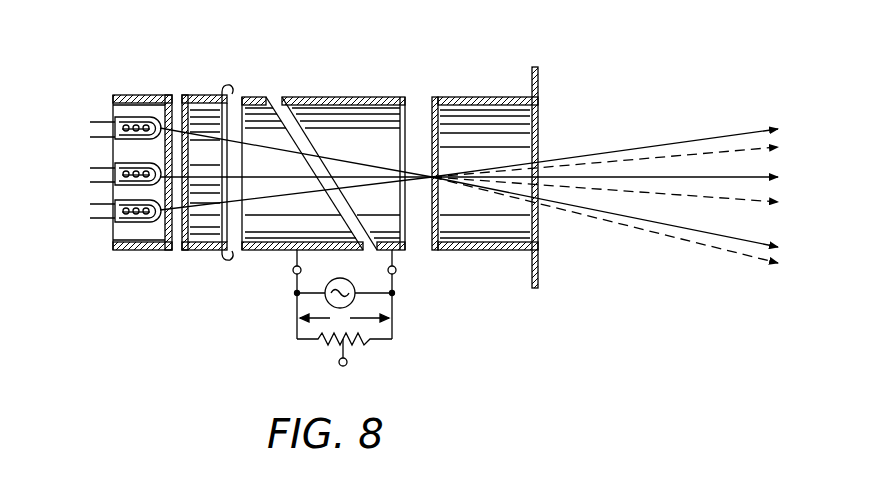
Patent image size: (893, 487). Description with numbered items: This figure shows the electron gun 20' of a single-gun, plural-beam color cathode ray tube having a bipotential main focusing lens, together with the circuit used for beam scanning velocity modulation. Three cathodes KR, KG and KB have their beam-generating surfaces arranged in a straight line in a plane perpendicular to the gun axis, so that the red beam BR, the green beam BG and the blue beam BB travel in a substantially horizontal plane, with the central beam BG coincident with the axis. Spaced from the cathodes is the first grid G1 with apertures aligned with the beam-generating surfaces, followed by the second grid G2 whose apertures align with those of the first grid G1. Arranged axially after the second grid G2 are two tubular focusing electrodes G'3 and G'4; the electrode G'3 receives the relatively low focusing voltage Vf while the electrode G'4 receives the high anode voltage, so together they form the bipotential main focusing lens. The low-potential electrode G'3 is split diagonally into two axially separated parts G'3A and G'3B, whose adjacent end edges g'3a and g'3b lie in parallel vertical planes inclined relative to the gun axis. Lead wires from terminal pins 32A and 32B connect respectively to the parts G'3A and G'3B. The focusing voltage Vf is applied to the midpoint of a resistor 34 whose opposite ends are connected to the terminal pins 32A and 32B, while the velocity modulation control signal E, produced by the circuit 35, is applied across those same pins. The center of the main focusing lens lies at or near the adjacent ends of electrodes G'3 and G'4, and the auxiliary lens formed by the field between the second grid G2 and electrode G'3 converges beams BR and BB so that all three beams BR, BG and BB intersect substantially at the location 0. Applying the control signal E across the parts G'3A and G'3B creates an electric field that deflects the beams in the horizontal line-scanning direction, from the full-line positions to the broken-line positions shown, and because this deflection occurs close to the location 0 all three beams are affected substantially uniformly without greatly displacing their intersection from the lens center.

The first grid G1 is at (142, 93).
The second grid G2 is at (202, 93).
The focusing lens electrode G'3 is at (319, 130).
The electrode part G'3A is at (298, 152).
The electrode part G'3B is at (343, 155).
The focusing electrode G'4 is at (485, 176).
The electron gun 20' is at (535, 30).
The cathode KR is at (125, 118).
The cathode KG is at (125, 164).
The cathode KB is at (122, 201).
The location of beam intersection 0 is at (421, 174).
The end edge g'3a is at (305, 209).
The end edge g'3b is at (373, 201).
The terminal pin 32A is at (293, 270).
The terminal pin 32B is at (396, 272).
The circuit 35 is at (366, 281).
The control signal E is at (344, 320).
The resistor 34 is at (322, 345).
The focusing voltage Vf is at (340, 367).
The blue beam BB is at (653, 141).
The green beam BG is at (692, 180).
The red beam BR is at (687, 228).